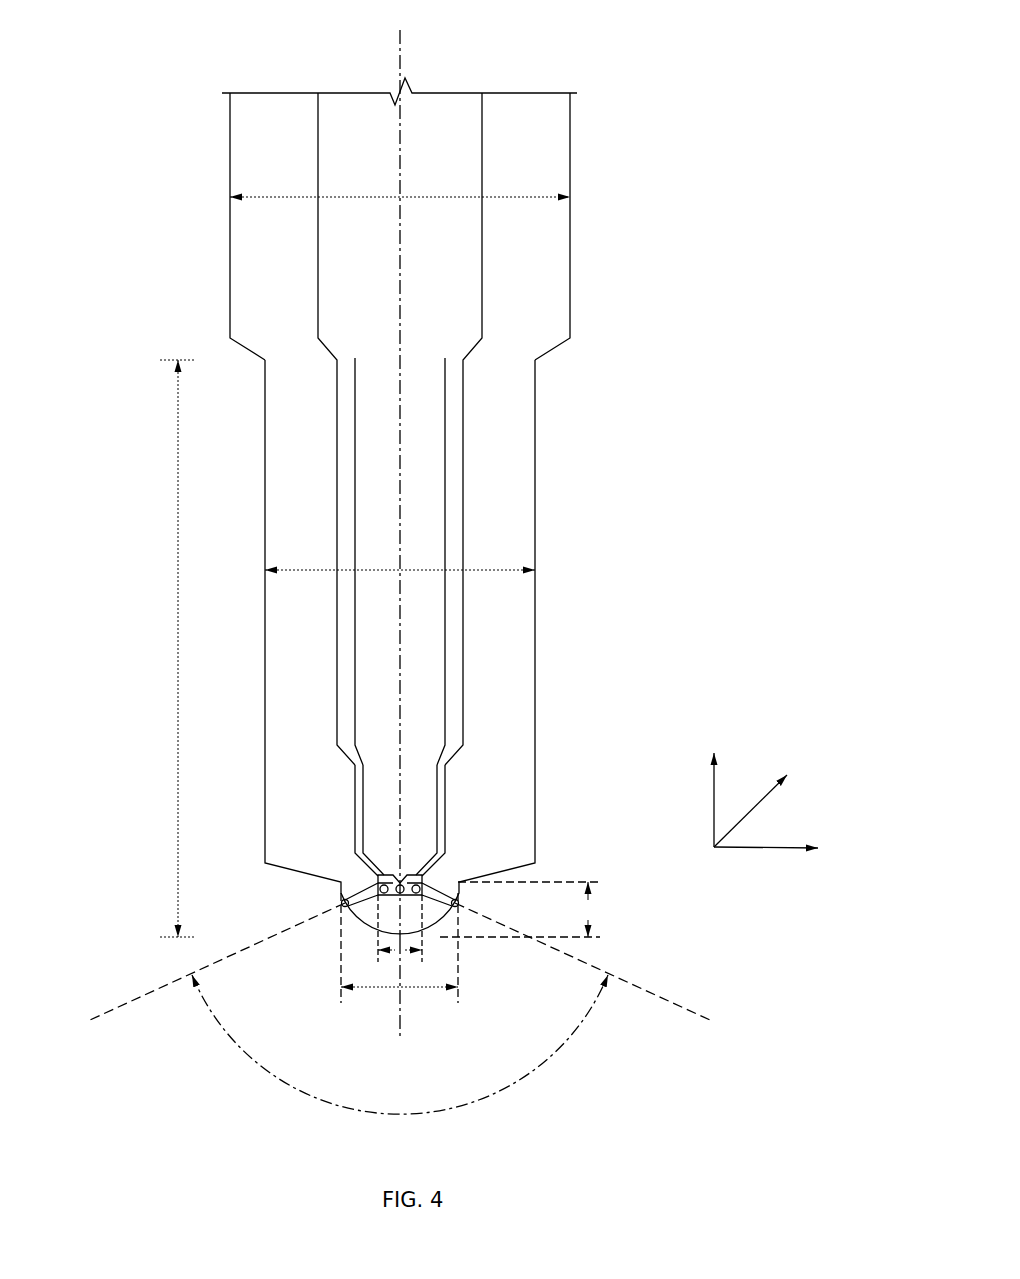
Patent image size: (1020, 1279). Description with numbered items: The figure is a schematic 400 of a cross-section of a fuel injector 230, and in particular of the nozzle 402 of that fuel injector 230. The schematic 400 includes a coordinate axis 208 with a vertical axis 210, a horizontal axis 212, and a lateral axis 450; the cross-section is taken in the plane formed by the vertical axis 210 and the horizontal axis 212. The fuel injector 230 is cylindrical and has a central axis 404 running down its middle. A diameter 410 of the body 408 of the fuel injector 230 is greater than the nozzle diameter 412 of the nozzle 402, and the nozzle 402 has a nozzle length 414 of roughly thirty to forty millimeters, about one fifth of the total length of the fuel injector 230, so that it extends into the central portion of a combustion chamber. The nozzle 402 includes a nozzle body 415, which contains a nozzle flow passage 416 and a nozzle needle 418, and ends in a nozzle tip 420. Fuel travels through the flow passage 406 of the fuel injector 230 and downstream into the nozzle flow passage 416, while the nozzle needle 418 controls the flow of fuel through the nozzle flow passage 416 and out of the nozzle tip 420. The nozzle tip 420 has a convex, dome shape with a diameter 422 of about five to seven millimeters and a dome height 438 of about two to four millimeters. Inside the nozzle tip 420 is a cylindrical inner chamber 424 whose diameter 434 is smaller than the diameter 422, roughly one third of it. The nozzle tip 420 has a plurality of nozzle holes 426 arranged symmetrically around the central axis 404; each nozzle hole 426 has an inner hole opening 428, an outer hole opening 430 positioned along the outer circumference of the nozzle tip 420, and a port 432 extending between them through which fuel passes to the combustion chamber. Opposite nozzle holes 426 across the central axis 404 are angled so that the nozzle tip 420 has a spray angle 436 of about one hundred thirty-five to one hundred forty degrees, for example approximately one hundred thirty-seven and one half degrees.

The schematic 400 is at (657, 35).
The nozzle 402 is at (618, 592).
The central axis 404 is at (400, 50).
The flow passage 406 is at (467, 295).
The body 408 is at (562, 143).
The diameter 410 is at (420, 197).
The nozzle diameter 412 is at (425, 570).
The nozzle length 414 is at (177, 650).
The nozzle body 415 is at (528, 473).
The nozzle flow passage 416 is at (455, 727).
The nozzle needle 418 is at (425, 808).
The nozzle tip 420 is at (480, 910).
The diameter 422 is at (403, 990).
The cylindrical inner chamber 424 is at (420, 877).
The nozzle holes 426 is at (358, 878).
The inner hole opening 428 is at (378, 900).
The outer hole opening 430 is at (343, 905).
The port 432 is at (363, 900).
The diameter 434 is at (410, 965).
The spray angle 436 is at (400, 1112).
The dome height 438 is at (588, 910).
The coordinate axis 208 is at (747, 868).
The vertical axis 210 is at (710, 800).
The horizontal axis 212 is at (763, 853).
The fuel injector 230 is at (753, 187).
The lateral axis 450 is at (757, 790).